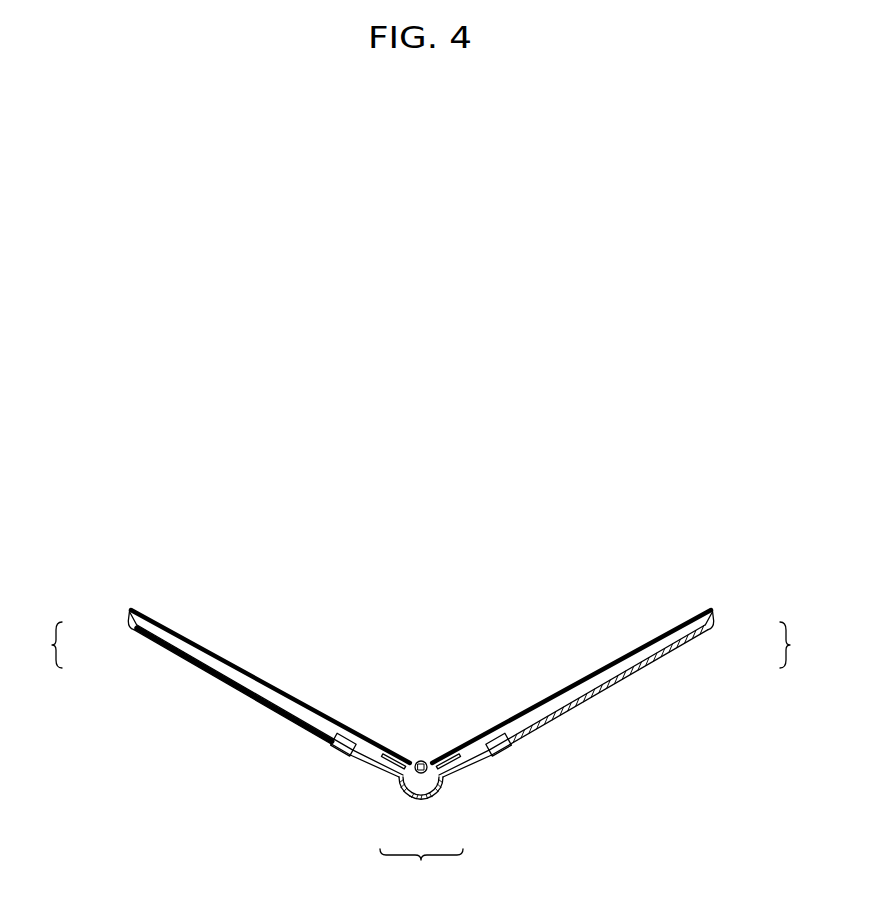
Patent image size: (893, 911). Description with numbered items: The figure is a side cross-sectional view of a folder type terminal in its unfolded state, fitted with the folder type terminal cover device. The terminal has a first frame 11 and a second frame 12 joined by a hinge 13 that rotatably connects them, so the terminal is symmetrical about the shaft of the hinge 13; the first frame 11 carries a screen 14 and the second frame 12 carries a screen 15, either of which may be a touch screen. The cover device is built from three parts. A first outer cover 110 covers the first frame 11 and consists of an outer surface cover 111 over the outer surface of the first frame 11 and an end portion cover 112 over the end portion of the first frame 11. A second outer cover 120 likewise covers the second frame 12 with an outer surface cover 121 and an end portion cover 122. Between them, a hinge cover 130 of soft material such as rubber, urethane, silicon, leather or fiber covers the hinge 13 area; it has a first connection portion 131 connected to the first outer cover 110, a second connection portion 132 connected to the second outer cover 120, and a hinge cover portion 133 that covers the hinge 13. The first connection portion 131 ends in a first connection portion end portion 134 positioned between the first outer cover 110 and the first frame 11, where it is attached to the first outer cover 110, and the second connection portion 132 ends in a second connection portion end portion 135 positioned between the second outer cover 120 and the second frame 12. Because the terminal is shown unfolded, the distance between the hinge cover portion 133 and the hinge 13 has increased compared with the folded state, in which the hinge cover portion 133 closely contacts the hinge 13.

The first frame 11 is at (610, 670).
The second frame 12 is at (232, 673).
The hinge 13 is at (419, 759).
The screen 14 is at (563, 687).
The screen 15 is at (278, 688).
The first outer cover 110 is at (627, 703).
The outer surface cover 111 is at (677, 650).
The end portion cover 112 is at (715, 620).
The second outer cover 120 is at (214, 703).
The outer surface cover 121 is at (163, 650).
The end portion cover 122 is at (127, 621).
The hinge cover 130 is at (418, 834).
The first connection portion 131 is at (452, 776).
The second connection portion 132 is at (389, 776).
The hinge cover portion 133 is at (419, 799).
The first connection portion end portion 134 is at (516, 741).
The second connection portion end portion 135 is at (324, 741).